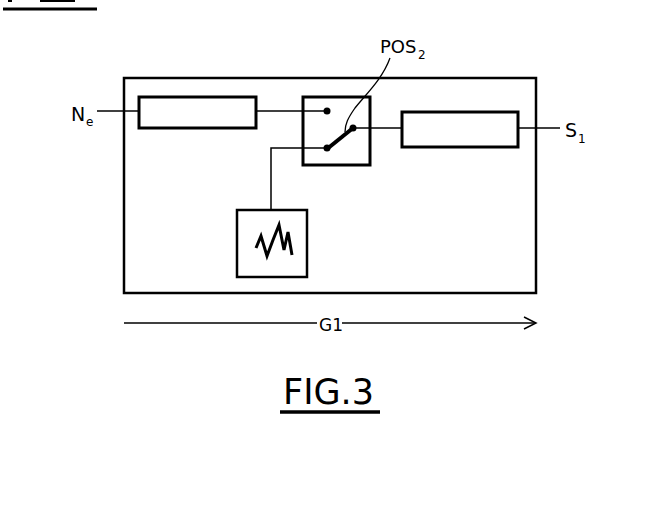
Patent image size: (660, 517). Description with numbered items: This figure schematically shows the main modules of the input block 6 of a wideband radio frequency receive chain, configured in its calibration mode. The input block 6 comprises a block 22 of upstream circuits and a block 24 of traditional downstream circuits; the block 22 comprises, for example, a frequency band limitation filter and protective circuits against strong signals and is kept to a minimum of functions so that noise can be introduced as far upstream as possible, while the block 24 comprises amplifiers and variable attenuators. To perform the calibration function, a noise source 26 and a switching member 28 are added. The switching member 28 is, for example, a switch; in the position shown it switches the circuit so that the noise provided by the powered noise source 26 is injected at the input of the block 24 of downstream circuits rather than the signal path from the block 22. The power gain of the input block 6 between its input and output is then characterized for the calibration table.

The input block 6 is at (210, 78).
The block of upstream circuits 22 is at (197, 112).
The block of downstream circuits 24 is at (460, 129).
The noise source 26 is at (307, 248).
The switching member 28 is at (352, 165).